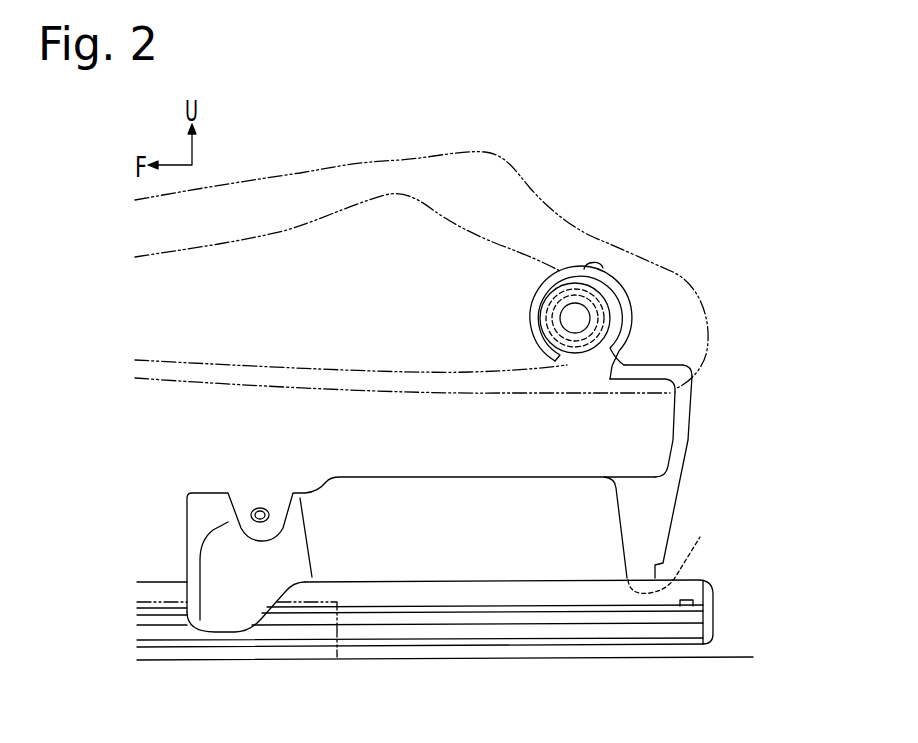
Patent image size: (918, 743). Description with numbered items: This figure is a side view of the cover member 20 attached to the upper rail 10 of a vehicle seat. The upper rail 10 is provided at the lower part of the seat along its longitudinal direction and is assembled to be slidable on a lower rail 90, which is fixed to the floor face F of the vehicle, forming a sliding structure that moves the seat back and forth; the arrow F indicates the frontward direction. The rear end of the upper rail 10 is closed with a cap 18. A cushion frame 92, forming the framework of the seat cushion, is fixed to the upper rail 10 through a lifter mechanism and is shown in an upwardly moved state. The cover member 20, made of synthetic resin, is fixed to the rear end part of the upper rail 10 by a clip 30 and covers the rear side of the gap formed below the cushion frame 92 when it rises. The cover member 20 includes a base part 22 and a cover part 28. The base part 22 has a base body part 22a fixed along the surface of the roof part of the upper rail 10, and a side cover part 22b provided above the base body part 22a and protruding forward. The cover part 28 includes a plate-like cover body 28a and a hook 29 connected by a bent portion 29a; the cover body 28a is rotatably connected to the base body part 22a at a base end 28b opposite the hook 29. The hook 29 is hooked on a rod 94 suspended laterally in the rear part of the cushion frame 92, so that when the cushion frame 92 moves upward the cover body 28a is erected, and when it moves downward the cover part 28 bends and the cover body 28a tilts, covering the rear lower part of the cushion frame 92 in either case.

The upper rail 10 is at (425, 600).
The cap 18 is at (713, 594).
The cover member 20 is at (660, 309).
The base part 22 is at (425, 653).
The base body part 22a is at (683, 572).
The side cover part 22b is at (522, 565).
The cover part 28 is at (768, 320).
The cover body 28a is at (686, 408).
The base end 28b is at (640, 572).
The hook 29 is at (642, 285).
The bent portion 29a is at (688, 369).
The clip 30 is at (683, 572).
The lower rail 90 is at (162, 600).
The cushion frame 92 is at (562, 223).
The rod 94 is at (598, 283).
The floor face / frontward direction F is at (728, 657).